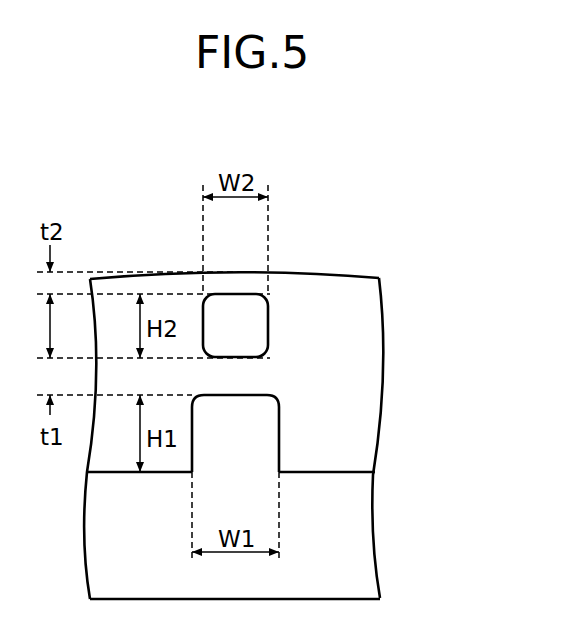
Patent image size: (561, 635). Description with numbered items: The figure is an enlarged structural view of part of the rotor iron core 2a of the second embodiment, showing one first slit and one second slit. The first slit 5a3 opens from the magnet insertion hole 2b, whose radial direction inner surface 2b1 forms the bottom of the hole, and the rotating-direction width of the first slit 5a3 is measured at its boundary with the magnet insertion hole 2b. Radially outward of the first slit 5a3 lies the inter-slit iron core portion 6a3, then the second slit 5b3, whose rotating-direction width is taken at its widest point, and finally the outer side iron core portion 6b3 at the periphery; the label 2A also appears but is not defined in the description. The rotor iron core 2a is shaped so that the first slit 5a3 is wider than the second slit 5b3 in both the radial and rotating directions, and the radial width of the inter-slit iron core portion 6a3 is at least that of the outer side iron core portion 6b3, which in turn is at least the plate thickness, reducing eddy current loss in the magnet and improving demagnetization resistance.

The rotor iron core 2a is at (337, 188).
The top surface 2A is at (363, 276).
The outer side iron core portion 6b3 is at (265, 288).
The second slit 5b3 is at (255, 325).
The inter-slit iron core portion 6a3 is at (238, 372).
The first slit 5a3 is at (238, 432).
The magnet insertion hole 2b is at (312, 531).
The radial direction inner surface 2b1 is at (330, 597).